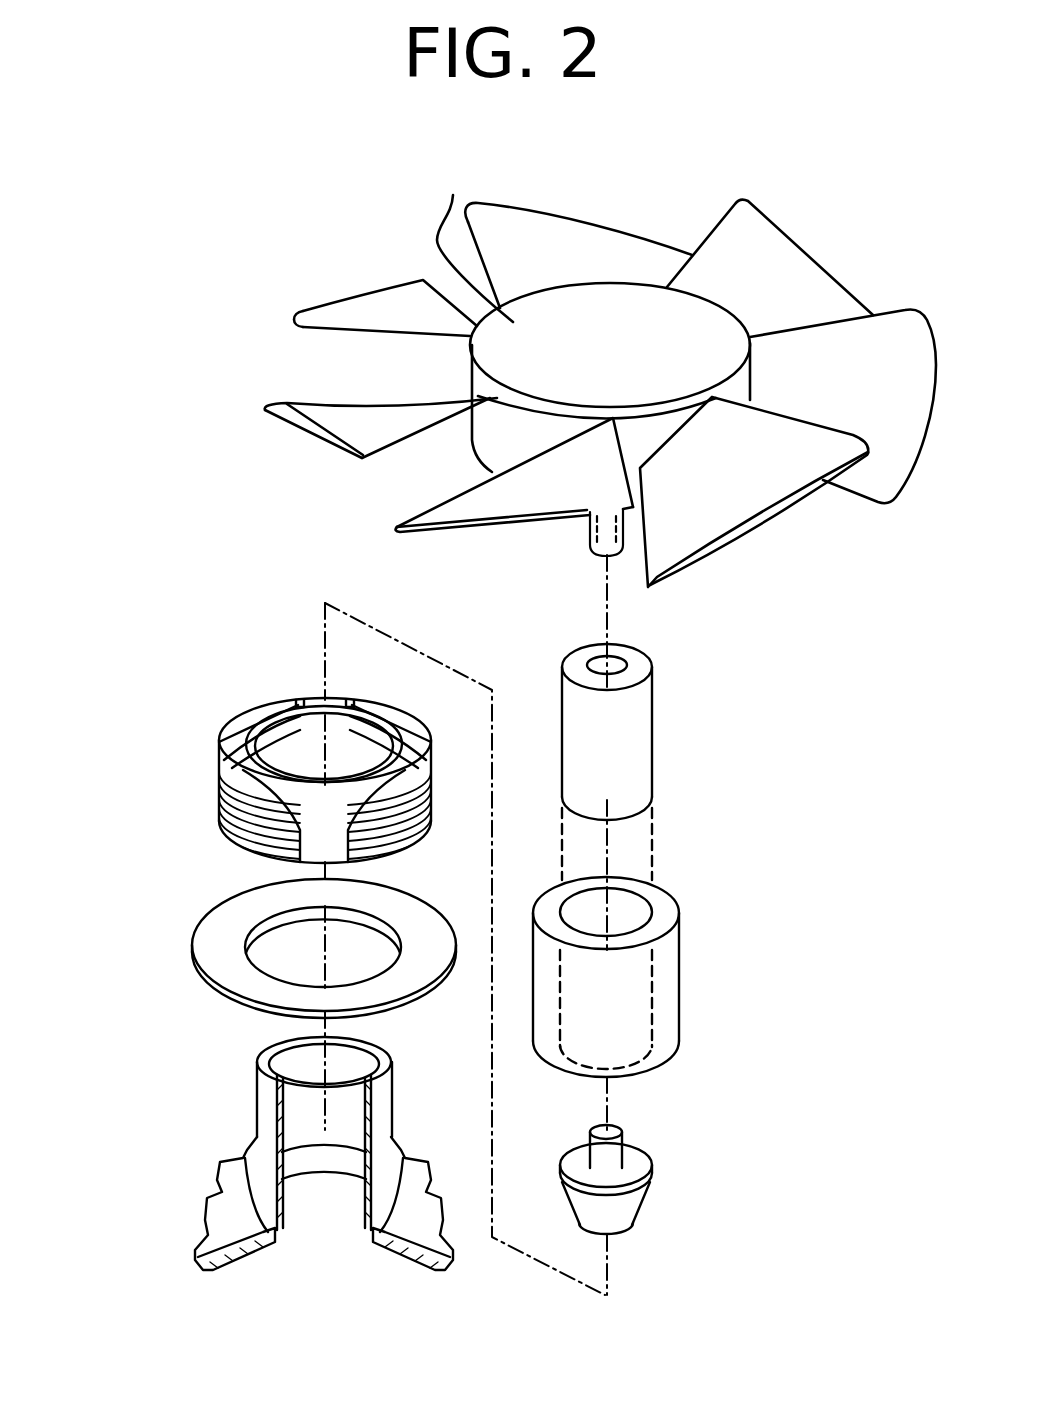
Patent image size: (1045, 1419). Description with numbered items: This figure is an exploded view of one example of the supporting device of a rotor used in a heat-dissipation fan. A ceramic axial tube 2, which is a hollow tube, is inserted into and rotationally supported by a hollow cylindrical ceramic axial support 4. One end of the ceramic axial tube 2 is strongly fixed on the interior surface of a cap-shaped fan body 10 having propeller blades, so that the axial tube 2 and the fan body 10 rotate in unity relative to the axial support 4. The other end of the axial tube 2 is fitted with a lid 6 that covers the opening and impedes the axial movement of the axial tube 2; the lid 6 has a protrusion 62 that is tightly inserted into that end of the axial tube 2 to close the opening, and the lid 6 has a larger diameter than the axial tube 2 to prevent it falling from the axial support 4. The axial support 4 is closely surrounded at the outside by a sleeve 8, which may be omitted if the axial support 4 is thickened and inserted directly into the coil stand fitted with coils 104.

The fan body 10 is at (453, 195).
The ceramic axial tube 2 is at (587, 543).
The ceramic axial support 4 is at (652, 753).
The sleeve 8 is at (672, 982).
The lid 6 is at (630, 1217).
The protrusion 62 is at (623, 1142).
The coils 104 is at (235, 832).